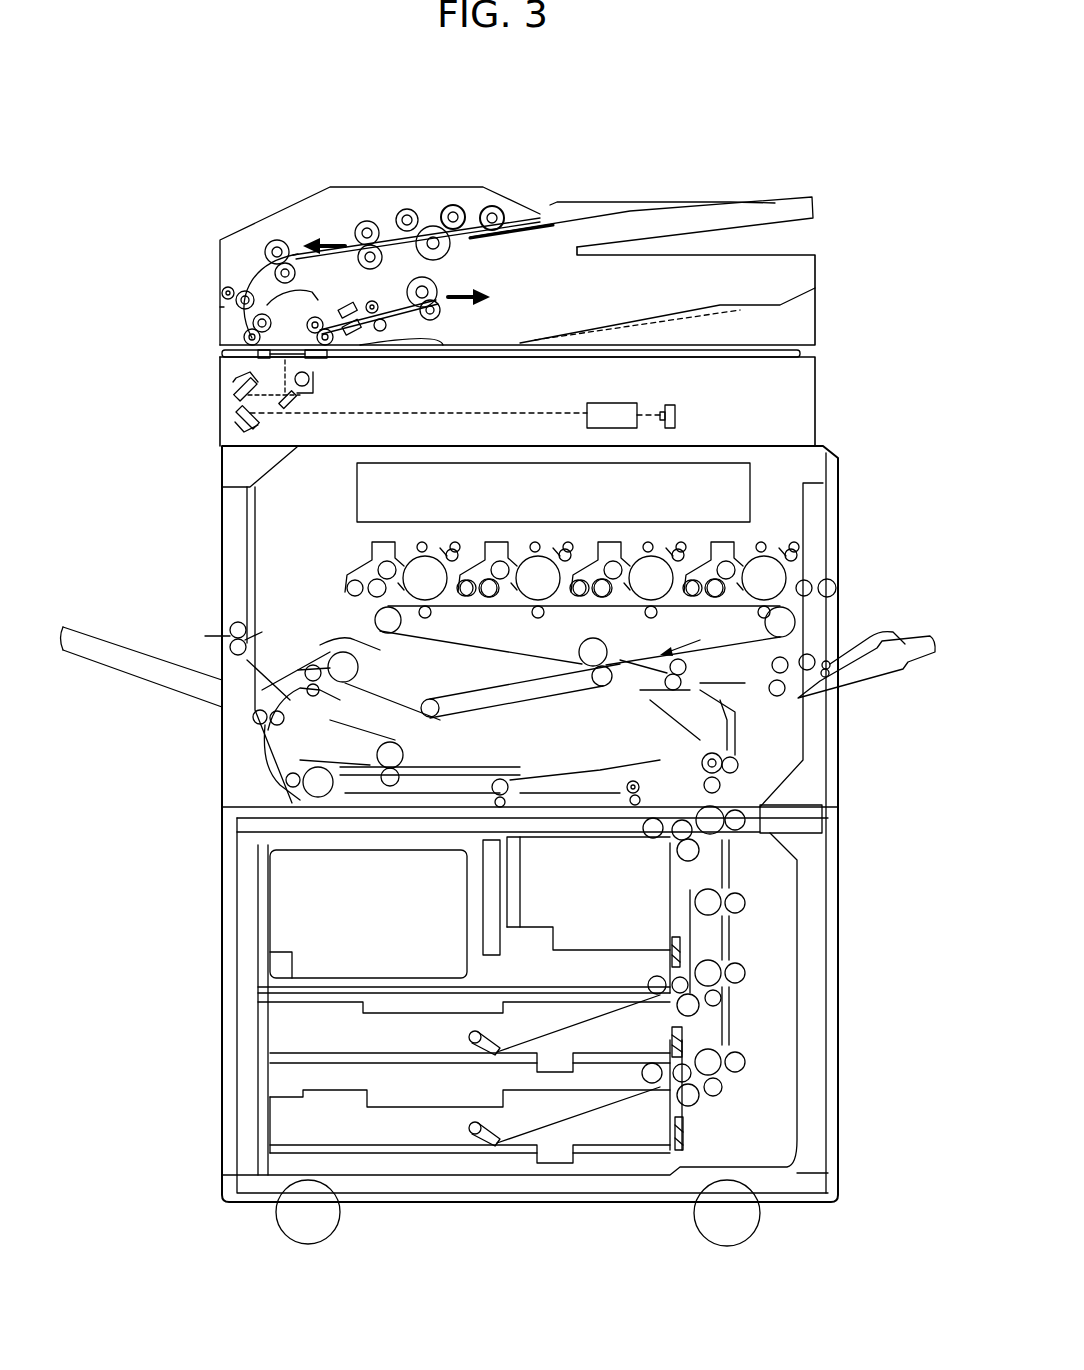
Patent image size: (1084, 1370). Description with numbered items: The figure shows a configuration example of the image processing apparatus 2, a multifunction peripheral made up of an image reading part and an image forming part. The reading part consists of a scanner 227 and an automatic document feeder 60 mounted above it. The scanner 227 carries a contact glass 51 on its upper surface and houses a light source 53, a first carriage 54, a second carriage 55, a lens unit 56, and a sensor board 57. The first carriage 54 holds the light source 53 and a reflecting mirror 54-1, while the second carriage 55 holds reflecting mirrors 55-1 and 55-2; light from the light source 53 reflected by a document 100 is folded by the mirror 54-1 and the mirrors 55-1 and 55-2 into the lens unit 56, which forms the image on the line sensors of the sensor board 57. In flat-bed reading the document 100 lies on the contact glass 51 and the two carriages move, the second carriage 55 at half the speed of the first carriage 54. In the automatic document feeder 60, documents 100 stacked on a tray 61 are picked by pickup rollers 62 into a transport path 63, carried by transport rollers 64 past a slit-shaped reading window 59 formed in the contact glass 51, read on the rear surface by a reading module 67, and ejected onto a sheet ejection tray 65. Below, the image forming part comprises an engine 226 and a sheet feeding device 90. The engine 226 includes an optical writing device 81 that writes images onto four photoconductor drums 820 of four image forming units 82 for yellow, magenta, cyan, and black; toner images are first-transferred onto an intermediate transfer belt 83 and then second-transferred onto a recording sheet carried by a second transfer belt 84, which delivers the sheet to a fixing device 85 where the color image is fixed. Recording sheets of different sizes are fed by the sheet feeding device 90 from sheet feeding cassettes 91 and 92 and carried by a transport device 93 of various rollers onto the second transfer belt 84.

The image processing apparatus 2 is at (758, 136).
The contact glass 51 is at (770, 360).
The light source 53 is at (312, 378).
The first carriage 54 is at (315, 392).
The reflecting mirror 54-1 is at (297, 398).
The second carriage 55 is at (240, 428).
The reflecting mirror 55-1 is at (240, 387).
The reflecting mirror 55-2 is at (247, 427).
The lens unit 56 is at (610, 428).
The sensor board 57 is at (663, 428).
The reading window 59 is at (280, 360).
The automatic document feeder 60 is at (828, 283).
The tray 61 is at (770, 200).
The pickup rollers 62 is at (456, 206).
The transport path 63 is at (297, 250).
The transport rollers 64 is at (272, 272).
The sheet ejection tray 65 is at (595, 320).
The reading module 67 is at (338, 306).
The optical writing device 81 is at (357, 495).
The image forming units 82 is at (470, 542).
The intermediate transfer belt 83 is at (457, 647).
The second transfer belt 84 is at (530, 678).
The fixing device 85 is at (332, 642).
The sheet feeding device 90 is at (220, 990).
The sheet feeding cassette 91 is at (410, 1062).
The sheet feeding cassette 92 is at (497, 1157).
The transport device 93 is at (740, 955).
The document 100 is at (557, 202).
The engine 226 is at (220, 720).
The scanner 227 is at (831, 375).
The photoconductor drums 820 is at (445, 600).